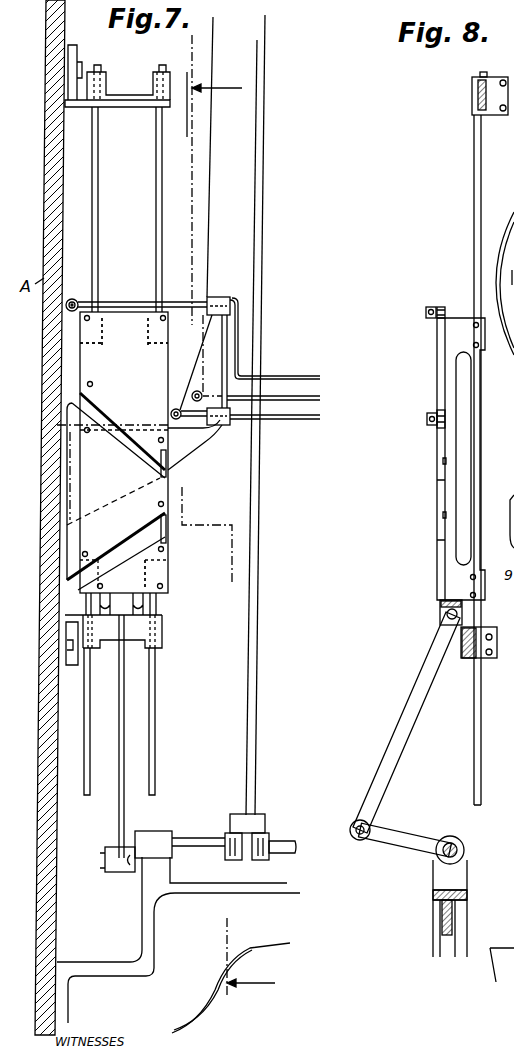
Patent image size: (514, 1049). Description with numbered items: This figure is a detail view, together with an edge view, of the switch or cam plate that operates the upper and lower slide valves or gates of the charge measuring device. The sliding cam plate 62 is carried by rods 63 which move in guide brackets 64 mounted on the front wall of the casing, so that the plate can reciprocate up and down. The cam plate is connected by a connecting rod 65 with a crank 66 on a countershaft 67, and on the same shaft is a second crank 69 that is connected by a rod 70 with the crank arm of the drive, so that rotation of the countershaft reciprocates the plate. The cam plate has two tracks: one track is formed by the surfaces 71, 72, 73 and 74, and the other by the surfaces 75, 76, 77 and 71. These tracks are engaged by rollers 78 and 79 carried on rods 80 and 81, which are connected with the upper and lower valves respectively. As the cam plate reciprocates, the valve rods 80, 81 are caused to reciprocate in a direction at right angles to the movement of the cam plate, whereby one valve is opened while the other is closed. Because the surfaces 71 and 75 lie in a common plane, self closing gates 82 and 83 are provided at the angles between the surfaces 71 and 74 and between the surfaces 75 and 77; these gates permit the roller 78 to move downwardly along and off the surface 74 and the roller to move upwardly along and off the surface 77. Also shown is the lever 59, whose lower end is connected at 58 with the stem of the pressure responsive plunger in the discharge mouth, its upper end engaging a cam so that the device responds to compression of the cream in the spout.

In FIG. 7, the connection 58 is at (201, 392).
In FIG. 7, the lever 59 is at (207, 264).
In FIG. 7, the sliding cam plate 62 is at (108, 384).
In FIG. 8, the sliding cam plate 62 is at (440, 386).
In FIG. 7, the rods 63 is at (158, 218).
In FIG. 8, the rods 63 is at (474, 222).
In FIG. 7, the guide brackets 64 is at (133, 108).
In FIG. 7, the connecting rod 65 is at (119, 780).
In FIG. 8, the connecting rod 65 is at (403, 724).
In FIG. 7, the crank 66 is at (133, 851).
In FIG. 8, the crank 66 is at (410, 836).
In FIG. 7, the countershaft 67 is at (290, 845).
In FIG. 8, the countershaft 67 is at (458, 846).
In FIG. 7, the crank 69 is at (265, 820).
In FIG. 7, the rod 70 is at (252, 594).
In FIG. 7, the surface 71 is at (134, 318).
In FIG. 7, the surface 72 is at (125, 331).
In FIG. 7, the surface 73 is at (82, 374).
In FIG. 7, the surface 74 is at (118, 425).
In FIG. 7, the surface 75 is at (168, 558).
In FIG. 7, the surface 76 is at (134, 598).
In FIG. 7, the surface 77 is at (133, 557).
In FIG. 7, the roller 78 is at (75, 299).
In FIG. 8, the roller 78 is at (443, 308).
In FIG. 7, the roller 79 is at (191, 367).
In FIG. 8, the roller 79 is at (437, 430).
In FIG. 7, the rod 80 is at (187, 304).
In FIG. 7, the rod 81 is at (261, 368).
In FIG. 7, the self closing gate 82 is at (168, 470).
In FIG. 8, the self closing gate 82 is at (442, 476).
In FIG. 7, the self closing gate 83 is at (166, 524).
In FIG. 8, the self closing gate 83 is at (441, 530).